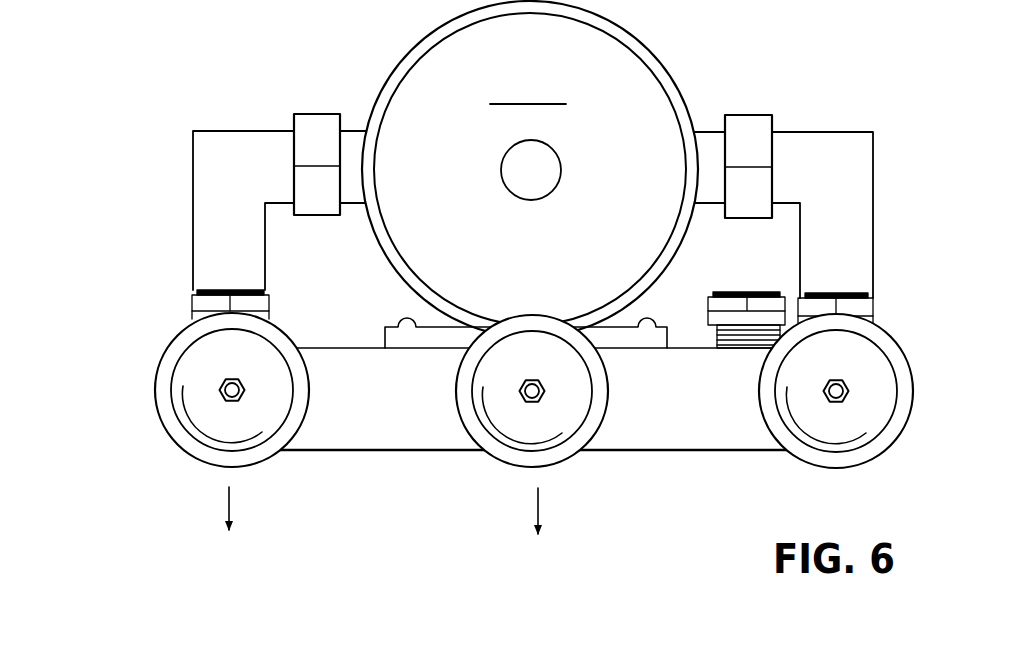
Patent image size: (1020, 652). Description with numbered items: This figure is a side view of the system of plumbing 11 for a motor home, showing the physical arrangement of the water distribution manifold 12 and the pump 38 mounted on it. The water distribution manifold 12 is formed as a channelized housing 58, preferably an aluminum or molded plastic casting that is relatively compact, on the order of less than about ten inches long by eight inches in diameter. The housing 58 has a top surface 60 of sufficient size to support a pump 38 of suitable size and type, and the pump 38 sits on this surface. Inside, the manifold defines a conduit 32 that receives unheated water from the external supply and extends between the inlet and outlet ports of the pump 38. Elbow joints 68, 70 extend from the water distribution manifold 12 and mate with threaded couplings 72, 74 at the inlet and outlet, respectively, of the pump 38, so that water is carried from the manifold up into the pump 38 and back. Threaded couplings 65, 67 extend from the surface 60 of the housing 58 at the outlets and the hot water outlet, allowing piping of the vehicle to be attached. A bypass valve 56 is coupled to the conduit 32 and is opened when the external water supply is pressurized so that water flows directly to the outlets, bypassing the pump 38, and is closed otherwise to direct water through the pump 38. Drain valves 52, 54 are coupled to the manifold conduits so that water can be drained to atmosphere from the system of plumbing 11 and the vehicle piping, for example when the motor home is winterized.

The system of plumbing 11 is at (104, 451).
The water distribution manifold 12 is at (535, 396).
The conduit 32 is at (865, 307).
The pump 38 is at (661, 71).
The drain valve 52 is at (551, 456).
The drain valve 54 is at (190, 441).
The bypass valve 56 is at (897, 360).
The channelized housing 58 is at (394, 437).
The top surface 60 is at (341, 338).
The threaded coupling 65 is at (727, 299).
The threaded coupling 67 is at (268, 303).
The elbow joint 68 is at (861, 187).
The elbow joint 70 is at (207, 188).
The threaded coupling 72 is at (745, 128).
The threaded coupling 74 is at (308, 128).